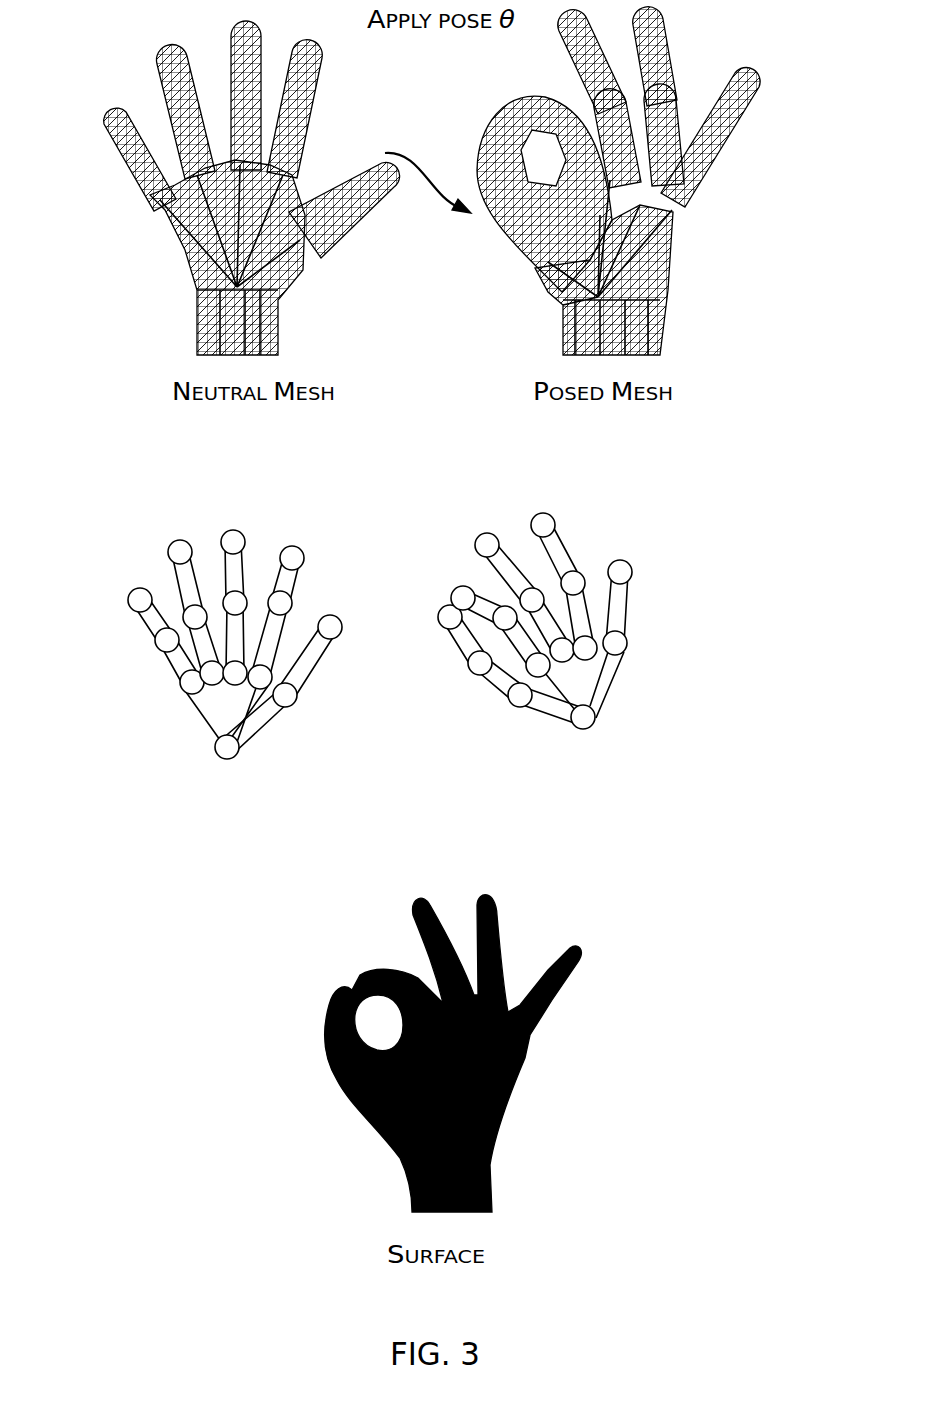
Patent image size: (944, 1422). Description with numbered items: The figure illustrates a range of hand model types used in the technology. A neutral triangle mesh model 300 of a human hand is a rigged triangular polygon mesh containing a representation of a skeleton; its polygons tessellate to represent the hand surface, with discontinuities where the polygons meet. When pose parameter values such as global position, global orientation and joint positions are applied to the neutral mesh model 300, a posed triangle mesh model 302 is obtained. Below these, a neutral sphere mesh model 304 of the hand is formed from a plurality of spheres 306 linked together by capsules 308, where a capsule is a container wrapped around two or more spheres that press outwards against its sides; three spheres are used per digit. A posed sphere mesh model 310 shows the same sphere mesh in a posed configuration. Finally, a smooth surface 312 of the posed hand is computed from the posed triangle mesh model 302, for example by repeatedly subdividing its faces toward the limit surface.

The neutral triangle mesh model 300 is at (281, 323).
The posed triangle mesh model 302 is at (665, 322).
The neutral sphere mesh model 304 is at (187, 644).
The sphere 306 is at (140, 603).
The capsule 308 is at (153, 625).
The posed sphere mesh model 310 is at (637, 632).
The smooth surface 312 is at (505, 1190).